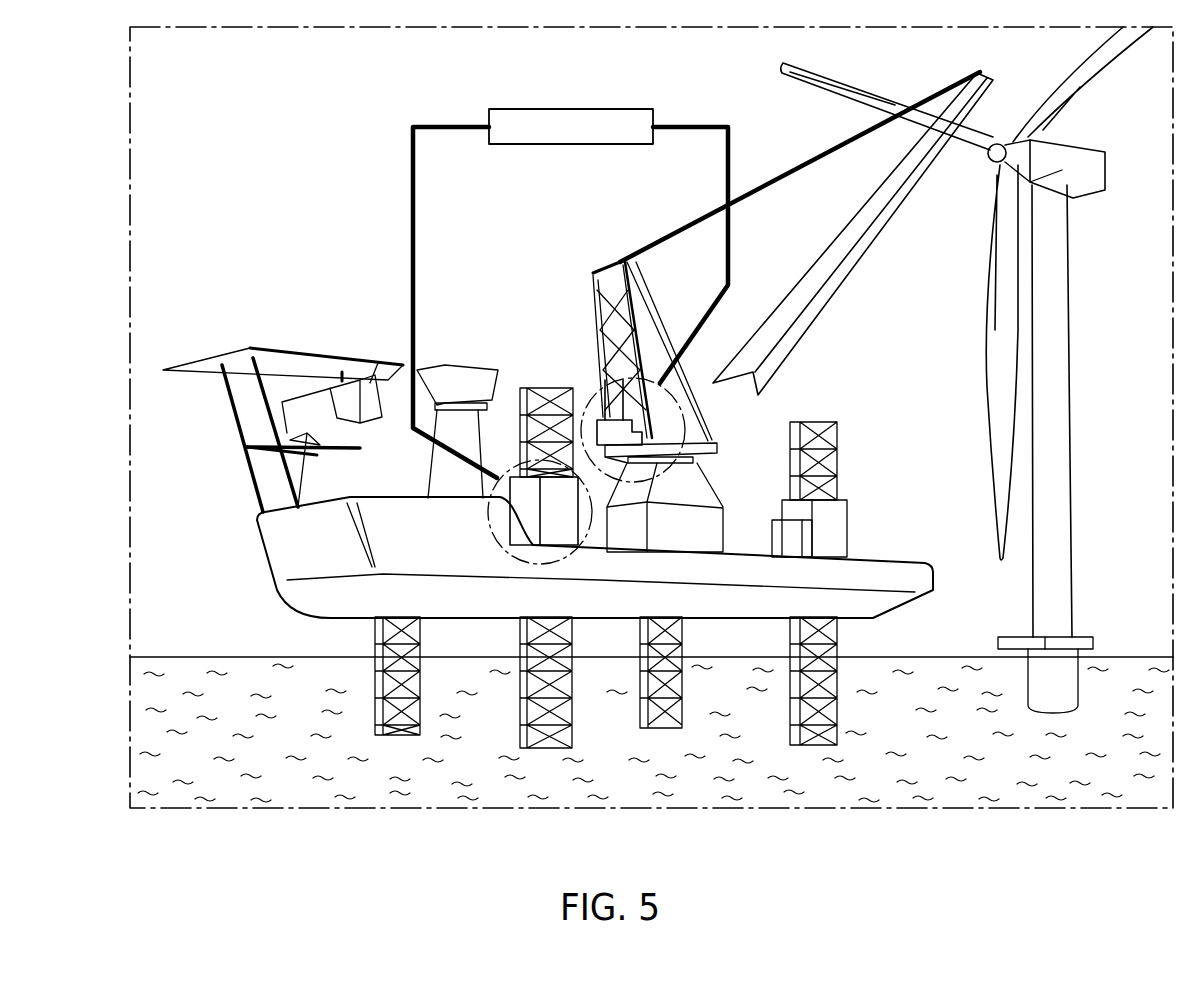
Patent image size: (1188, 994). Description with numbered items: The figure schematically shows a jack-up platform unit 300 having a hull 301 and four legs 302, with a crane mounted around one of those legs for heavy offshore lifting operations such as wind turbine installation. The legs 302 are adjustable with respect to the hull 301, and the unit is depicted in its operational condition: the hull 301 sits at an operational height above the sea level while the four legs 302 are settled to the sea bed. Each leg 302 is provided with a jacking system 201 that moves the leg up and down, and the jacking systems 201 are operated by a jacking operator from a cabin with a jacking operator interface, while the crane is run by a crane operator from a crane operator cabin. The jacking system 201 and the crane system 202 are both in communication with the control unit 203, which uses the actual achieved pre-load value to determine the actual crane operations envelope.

The jacking system 201 is at (513, 507).
The crane system 202 is at (718, 442).
The control unit 203 is at (569, 109).
The jack-up platform unit 300 is at (571, 465).
The hull 301 is at (285, 542).
The legs 302 is at (820, 707).